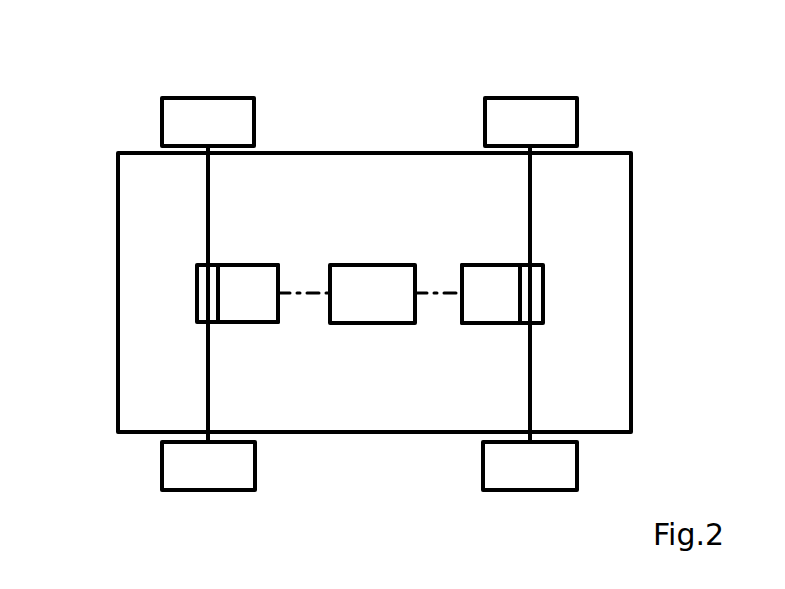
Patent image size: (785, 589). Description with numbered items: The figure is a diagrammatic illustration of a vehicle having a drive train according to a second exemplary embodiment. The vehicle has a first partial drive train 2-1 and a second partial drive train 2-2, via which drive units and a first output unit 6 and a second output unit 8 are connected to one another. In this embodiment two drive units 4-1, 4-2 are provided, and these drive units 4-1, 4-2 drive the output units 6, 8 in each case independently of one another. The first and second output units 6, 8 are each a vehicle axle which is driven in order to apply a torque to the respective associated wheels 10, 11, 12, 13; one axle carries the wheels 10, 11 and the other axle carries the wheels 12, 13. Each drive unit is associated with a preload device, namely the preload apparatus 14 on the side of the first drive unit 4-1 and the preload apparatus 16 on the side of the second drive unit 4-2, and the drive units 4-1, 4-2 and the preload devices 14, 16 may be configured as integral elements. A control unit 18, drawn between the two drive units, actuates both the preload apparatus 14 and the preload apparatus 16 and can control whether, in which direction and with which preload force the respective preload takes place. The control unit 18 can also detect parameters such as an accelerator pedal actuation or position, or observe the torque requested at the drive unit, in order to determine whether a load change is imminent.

The first partial drive train 2-1 is at (203, 192).
The second partial drive train 2-2 is at (535, 192).
The first drive unit 4-1 is at (248, 293).
The second drive unit 4-2 is at (490, 281).
The first output unit 6 is at (207, 352).
The second output unit 8 is at (537, 352).
The wheel 10 is at (215, 467).
The wheel 11 is at (213, 122).
The wheel 12 is at (537, 467).
The wheel 13 is at (538, 122).
The preload apparatus 14 is at (207, 292).
The preload apparatus 16 is at (537, 313).
The control unit 18 is at (365, 279).